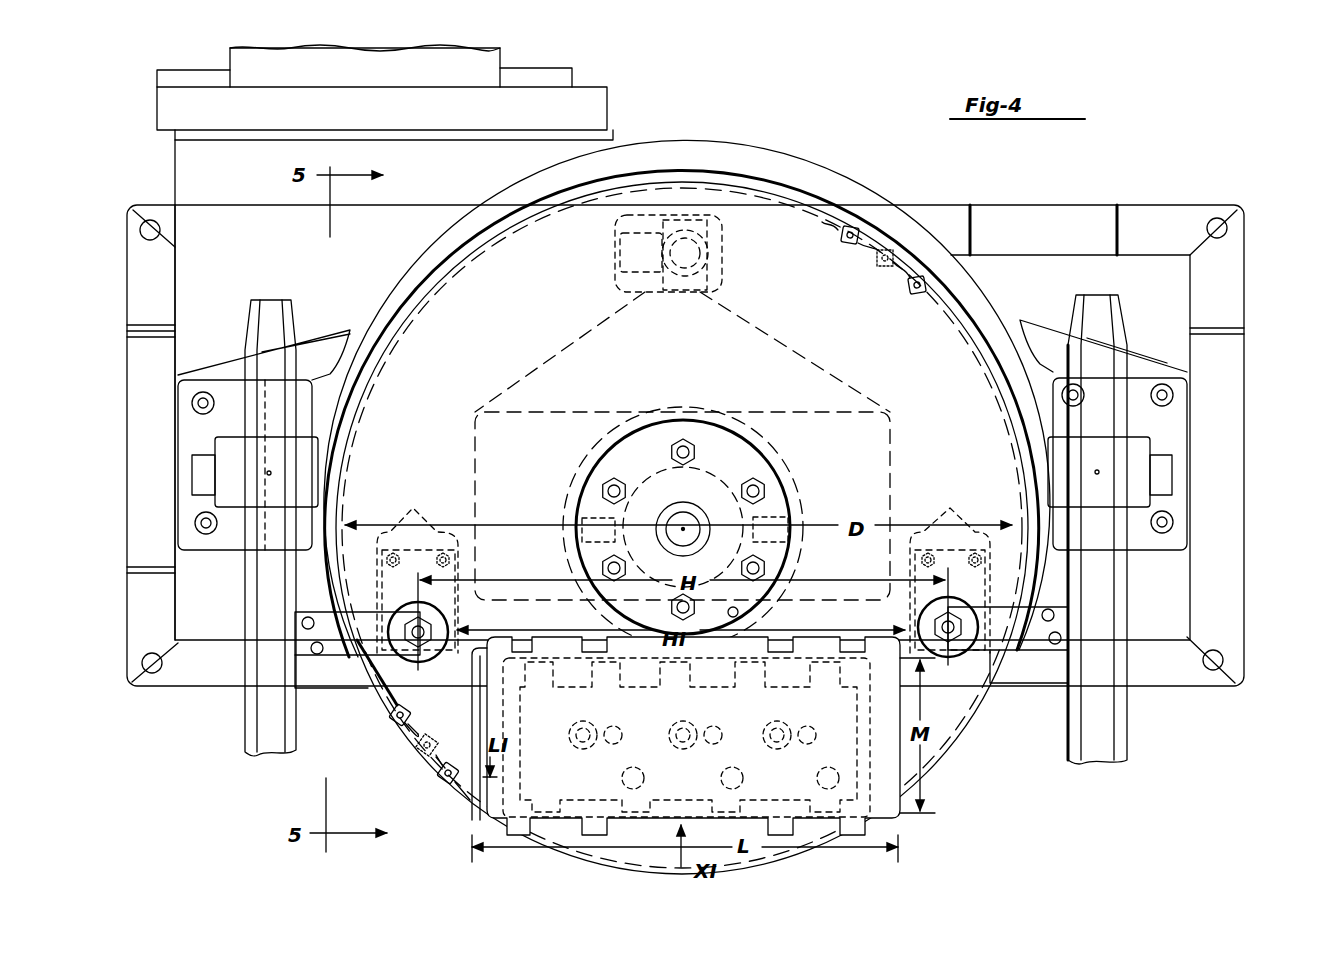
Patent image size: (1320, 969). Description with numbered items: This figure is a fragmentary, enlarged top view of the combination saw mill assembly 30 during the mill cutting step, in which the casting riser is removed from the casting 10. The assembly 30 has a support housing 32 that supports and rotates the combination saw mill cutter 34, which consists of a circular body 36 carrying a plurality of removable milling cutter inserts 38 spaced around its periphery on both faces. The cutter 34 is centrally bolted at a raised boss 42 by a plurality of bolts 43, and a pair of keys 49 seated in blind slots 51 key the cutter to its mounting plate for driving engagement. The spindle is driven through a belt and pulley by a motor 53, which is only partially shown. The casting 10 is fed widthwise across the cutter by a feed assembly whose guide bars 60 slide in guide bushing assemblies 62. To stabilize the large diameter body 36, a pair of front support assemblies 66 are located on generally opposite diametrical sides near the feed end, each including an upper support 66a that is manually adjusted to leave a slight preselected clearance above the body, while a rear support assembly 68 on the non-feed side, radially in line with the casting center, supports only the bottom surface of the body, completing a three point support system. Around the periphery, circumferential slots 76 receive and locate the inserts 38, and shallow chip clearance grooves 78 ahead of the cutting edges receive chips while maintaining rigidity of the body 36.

The casting 10 is at (900, 815).
The combination saw mill assembly 30 is at (1032, 767).
The support housing 32 is at (205, 665).
The combination saw mill cutter 34 is at (946, 346).
The circular body 36 is at (787, 232).
The milling cutter inserts 38 is at (917, 280).
The raised boss 42 is at (742, 467).
The bolts 43 is at (614, 482).
The keys 49 is at (680, 506).
The blind slots 51 is at (578, 528).
The motor 53 is at (492, 62).
The guide bars 60 is at (265, 590).
The guide bushing assemblies 62 is at (187, 480).
The front support assemblies 66 is at (365, 648).
The upper support 66a is at (400, 662).
The rear support assembly 68 is at (717, 258).
The slots 76 is at (448, 760).
The chip clearance grooves 78 is at (445, 772).